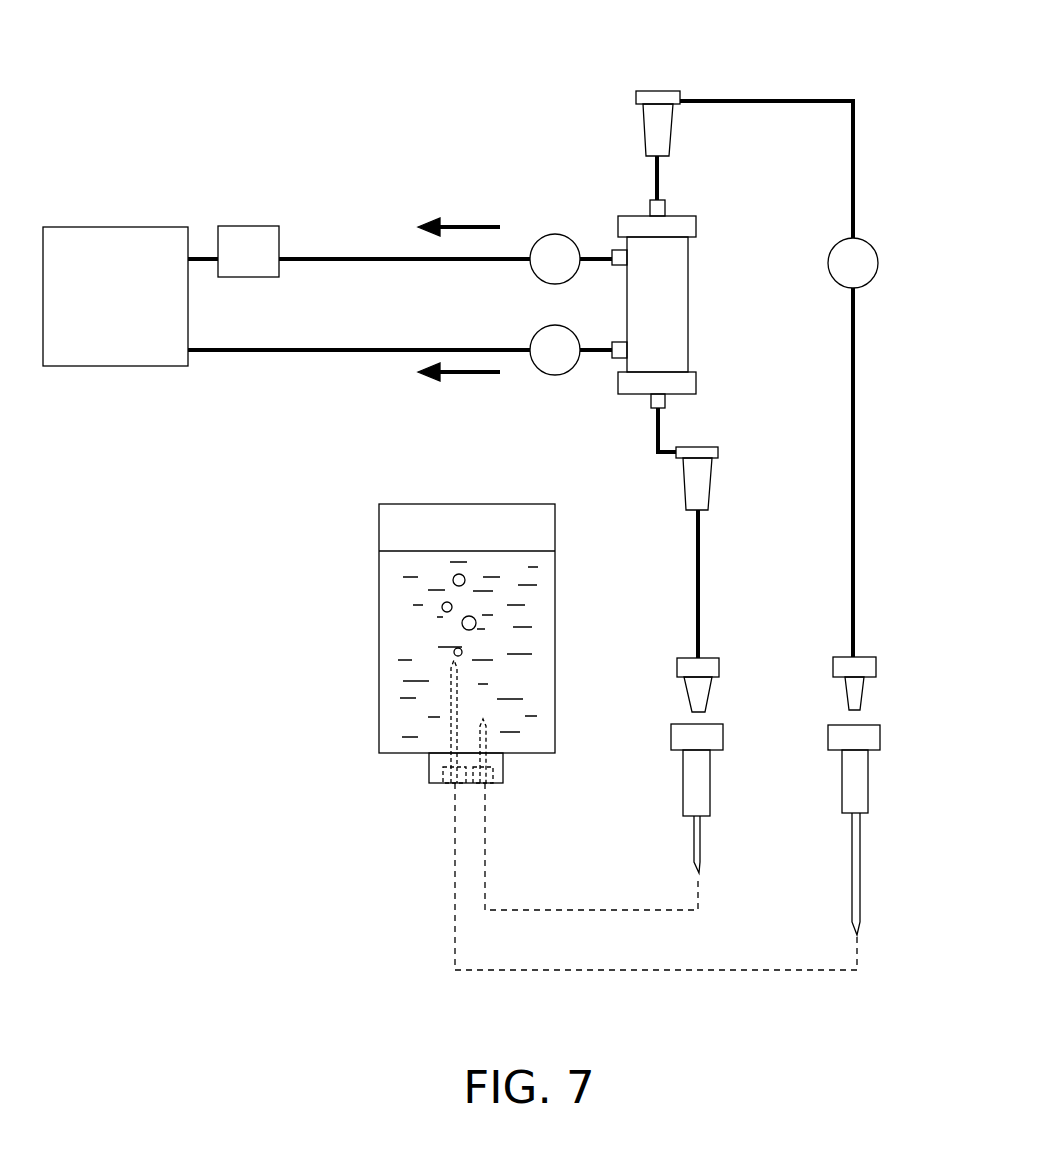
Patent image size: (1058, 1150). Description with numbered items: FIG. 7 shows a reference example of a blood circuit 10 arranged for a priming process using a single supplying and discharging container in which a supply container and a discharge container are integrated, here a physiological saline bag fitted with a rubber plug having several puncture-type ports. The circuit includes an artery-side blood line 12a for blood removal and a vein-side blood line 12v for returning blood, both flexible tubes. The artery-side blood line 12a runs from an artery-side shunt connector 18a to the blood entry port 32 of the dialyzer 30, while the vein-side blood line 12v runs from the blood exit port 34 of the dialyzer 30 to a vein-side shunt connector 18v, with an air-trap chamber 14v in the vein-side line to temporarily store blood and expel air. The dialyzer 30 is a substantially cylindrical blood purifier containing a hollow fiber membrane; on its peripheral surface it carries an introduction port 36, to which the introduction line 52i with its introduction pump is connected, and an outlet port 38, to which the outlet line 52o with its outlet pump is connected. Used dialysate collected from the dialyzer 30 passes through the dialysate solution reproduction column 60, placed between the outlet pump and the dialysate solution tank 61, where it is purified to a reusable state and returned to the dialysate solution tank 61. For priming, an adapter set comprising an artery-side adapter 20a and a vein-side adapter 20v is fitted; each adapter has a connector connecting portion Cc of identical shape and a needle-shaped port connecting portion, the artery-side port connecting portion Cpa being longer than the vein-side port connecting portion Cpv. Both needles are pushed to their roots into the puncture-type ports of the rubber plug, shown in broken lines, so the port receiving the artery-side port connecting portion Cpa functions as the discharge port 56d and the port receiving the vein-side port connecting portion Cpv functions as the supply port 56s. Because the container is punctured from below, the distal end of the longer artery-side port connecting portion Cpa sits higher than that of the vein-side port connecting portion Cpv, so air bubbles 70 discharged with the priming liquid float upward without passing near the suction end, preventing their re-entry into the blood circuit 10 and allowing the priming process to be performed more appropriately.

The blood circuit 10 is at (734, 78).
The artery-side blood line 12a is at (857, 412).
The vein-side blood line 12v is at (700, 624).
The air-trap chamber 14v is at (643, 122).
The artery-side shunt connector 18a is at (867, 665).
The vein-side shunt connector 18v is at (677, 668).
The artery-side adapter 20a is at (862, 775).
The vein-side adapter 20v is at (683, 778).
The dialyzer 30 is at (690, 318).
The blood entry port 32 is at (667, 207).
The blood exit port 34 is at (665, 400).
The introduction port 36 is at (614, 360).
The outlet port 38 is at (614, 250).
The introduction line 52i is at (380, 350).
The outlet line 52o is at (372, 258).
The discharge port 56d is at (447, 786).
The supply port 56s is at (490, 786).
The dialysate solution reproduction column 60 is at (243, 226).
The dialysate solution tank 61 is at (130, 226).
The air bubbles 70 is at (462, 623).
The connector connecting portion Cc is at (672, 742).
The artery-side port connecting portion Cpa is at (860, 872).
The vein-side port connecting portion Cpv is at (694, 835).